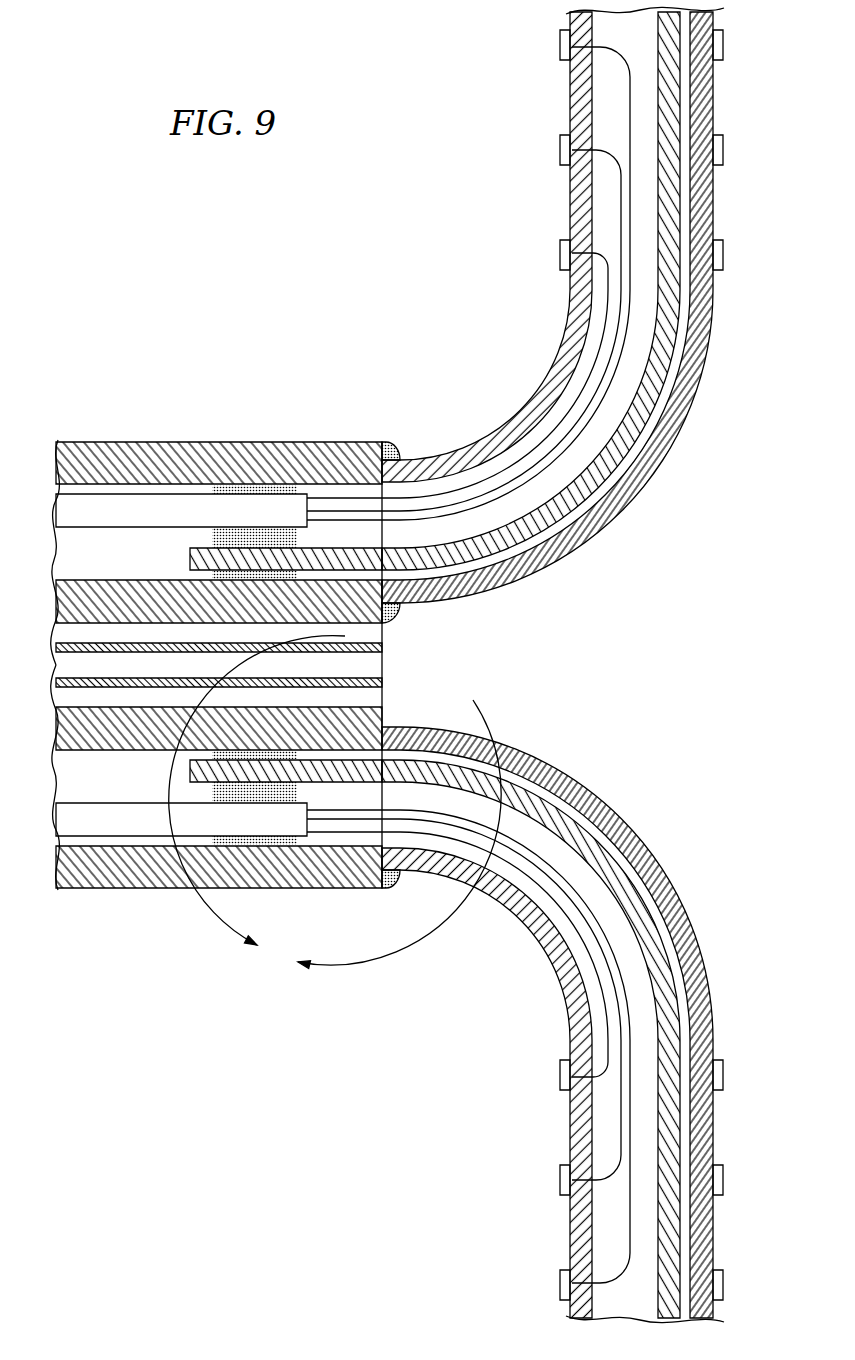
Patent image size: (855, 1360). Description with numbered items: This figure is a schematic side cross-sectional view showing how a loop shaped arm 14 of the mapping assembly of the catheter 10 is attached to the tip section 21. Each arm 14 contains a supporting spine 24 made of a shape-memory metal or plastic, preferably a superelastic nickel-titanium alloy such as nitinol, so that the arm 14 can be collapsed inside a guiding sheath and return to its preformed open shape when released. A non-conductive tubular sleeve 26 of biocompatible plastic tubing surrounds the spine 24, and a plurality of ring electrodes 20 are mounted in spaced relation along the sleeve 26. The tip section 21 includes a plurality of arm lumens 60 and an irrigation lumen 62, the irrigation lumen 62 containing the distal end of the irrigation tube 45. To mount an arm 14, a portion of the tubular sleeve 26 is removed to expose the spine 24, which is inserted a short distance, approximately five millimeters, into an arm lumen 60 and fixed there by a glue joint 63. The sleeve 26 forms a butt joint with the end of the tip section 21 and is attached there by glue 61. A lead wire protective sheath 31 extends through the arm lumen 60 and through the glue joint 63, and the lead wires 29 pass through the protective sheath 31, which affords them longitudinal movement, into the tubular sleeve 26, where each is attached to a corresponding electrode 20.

The catheter 10 is at (335, 802).
The arm 14 is at (705, 10).
The electrode 20 is at (722, 152).
The tip section 21 is at (242, 442).
The supporting spine 24 is at (540, 522).
The non-conductive tubular sleeve 26 is at (613, 493).
The lead wires 29 is at (337, 493).
The lead wire protective sheath 31 is at (80, 511).
The irrigation tube 45 is at (382, 697).
The arm lumen 60 is at (337, 492).
The glue 61 is at (390, 450).
The irrigation lumen 62 is at (373, 632).
The glue joint 63 is at (302, 488).